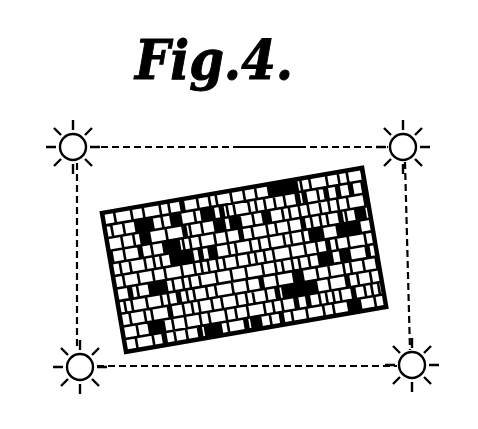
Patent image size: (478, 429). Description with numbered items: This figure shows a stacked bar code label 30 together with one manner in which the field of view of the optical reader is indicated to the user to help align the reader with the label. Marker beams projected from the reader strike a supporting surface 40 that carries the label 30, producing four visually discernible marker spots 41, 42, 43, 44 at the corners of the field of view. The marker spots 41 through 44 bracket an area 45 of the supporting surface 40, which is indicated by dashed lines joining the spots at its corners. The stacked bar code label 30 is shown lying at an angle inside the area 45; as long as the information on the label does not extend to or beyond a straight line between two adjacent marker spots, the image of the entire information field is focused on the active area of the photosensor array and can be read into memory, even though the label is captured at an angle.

The stacked bar code label 30 is at (201, 197).
The supporting surface 40 is at (158, 137).
The marker spot 41 is at (79, 135).
The marker spot 42 is at (396, 134).
The marker spot 43 is at (79, 380).
The marker spot 44 is at (409, 378).
The area 45 is at (262, 153).